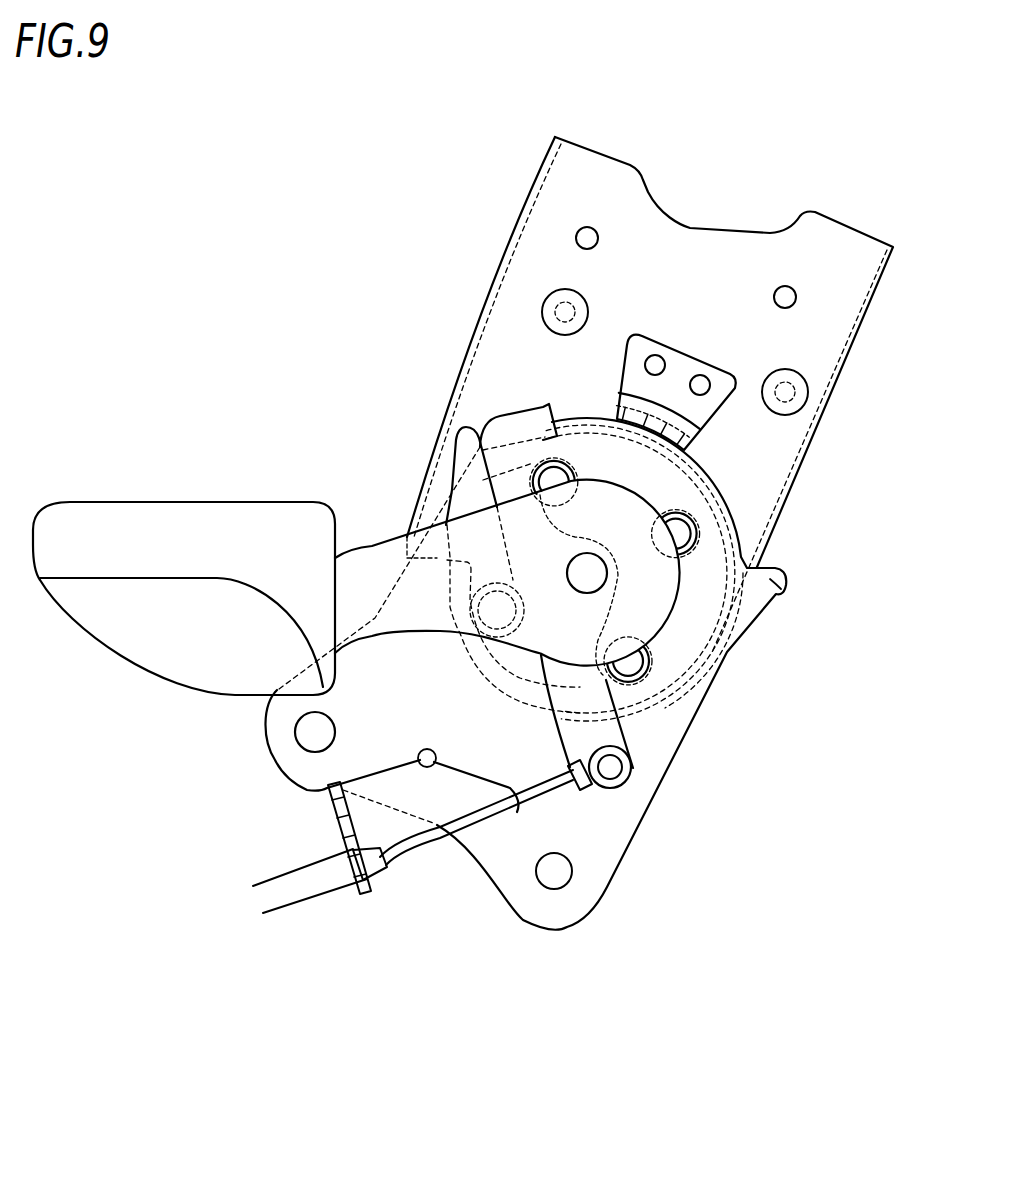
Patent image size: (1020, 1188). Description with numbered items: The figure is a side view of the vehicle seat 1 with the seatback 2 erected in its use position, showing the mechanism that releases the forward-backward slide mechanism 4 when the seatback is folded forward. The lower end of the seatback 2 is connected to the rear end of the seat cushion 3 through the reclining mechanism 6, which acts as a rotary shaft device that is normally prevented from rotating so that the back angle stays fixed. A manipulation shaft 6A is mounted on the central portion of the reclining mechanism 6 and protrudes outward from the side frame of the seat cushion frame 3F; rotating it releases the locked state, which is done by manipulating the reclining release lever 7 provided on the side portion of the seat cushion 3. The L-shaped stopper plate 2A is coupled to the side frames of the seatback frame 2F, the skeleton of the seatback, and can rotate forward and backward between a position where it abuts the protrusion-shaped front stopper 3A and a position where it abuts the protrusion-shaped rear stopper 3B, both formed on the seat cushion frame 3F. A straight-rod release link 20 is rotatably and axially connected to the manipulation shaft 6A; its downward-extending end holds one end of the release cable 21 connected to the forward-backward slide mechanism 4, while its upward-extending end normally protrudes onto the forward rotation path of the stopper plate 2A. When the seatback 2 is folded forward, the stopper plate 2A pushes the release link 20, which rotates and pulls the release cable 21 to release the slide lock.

The vehicle seat 1 is at (360, 160).
The seatback 2 is at (483, 186).
The seatback frame 2F is at (505, 313).
The stopper plate 2A is at (660, 407).
The seat cushion 3 is at (227, 739).
The front stopper 3A is at (470, 452).
The rear stopper 3B is at (782, 585).
The seat cushion frame 3F is at (373, 735).
The reclining release lever 7 is at (180, 525).
The reclining mechanism 6 is at (683, 640).
The manipulation shaft 6A is at (590, 572).
The release link 20 is at (607, 737).
The release cable 21 is at (413, 857).
The forward-backward slide mechanism 4 is at (362, 887).